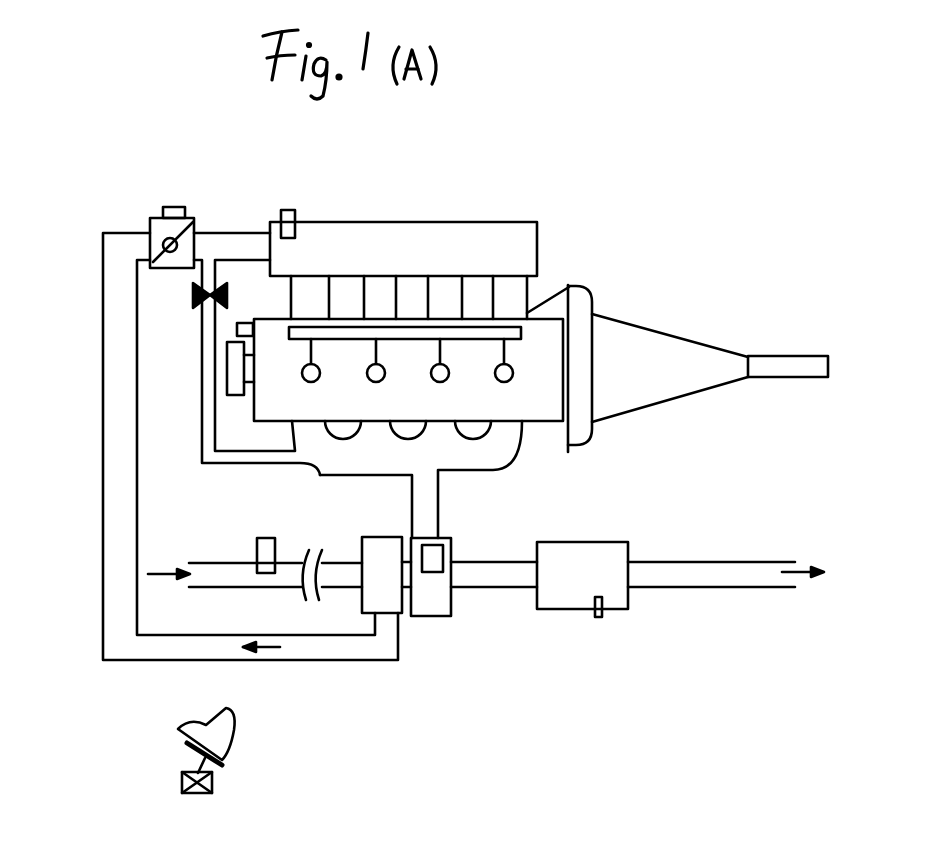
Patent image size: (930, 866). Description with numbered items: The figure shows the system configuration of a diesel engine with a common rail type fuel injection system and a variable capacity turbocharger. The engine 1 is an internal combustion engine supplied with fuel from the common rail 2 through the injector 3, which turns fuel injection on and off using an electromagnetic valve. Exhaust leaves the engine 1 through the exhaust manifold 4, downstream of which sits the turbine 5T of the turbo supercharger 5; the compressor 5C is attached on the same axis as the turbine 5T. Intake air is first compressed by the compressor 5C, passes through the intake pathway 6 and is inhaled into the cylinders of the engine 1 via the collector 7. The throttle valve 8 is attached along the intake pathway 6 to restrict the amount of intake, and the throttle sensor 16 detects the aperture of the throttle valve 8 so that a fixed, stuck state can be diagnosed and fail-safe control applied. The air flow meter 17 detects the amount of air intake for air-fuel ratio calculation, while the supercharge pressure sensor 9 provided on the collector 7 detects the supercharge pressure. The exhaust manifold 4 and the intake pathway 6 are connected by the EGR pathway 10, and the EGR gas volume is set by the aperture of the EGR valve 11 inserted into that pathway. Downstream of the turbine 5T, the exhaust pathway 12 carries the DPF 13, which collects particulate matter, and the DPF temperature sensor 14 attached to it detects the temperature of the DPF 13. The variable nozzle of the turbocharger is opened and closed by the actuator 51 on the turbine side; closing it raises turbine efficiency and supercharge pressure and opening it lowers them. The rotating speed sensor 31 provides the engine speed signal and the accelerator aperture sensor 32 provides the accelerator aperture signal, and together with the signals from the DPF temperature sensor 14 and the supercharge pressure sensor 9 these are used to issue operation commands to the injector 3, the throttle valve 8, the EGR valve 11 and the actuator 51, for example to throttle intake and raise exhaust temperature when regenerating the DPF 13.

The engine 1 is at (535, 395).
The common rail 2 is at (470, 332).
The injector 3 is at (507, 370).
The exhaust manifold 4 is at (320, 476).
The turbo supercharger 5 is at (425, 629).
The compressor 5C is at (372, 537).
The turbine 5T is at (430, 616).
The intake pathway 6 is at (103, 507).
The collector 7 is at (441, 233).
The throttle valve 8 is at (195, 218).
The supercharge pressure sensor 9 is at (297, 210).
The EGR pathway 10 is at (226, 463).
The EGR valve 11 is at (193, 295).
The exhaust pathway 12 is at (488, 588).
The DPF 13 is at (548, 610).
The DPF temperature sensor 14 is at (598, 617).
The throttle sensor 16 is at (163, 212).
The air flow meter 17 is at (257, 545).
The rotating speed sensor 31 is at (245, 323).
The accelerator aperture sensor 32 is at (182, 780).
The actuator 51 is at (443, 550).